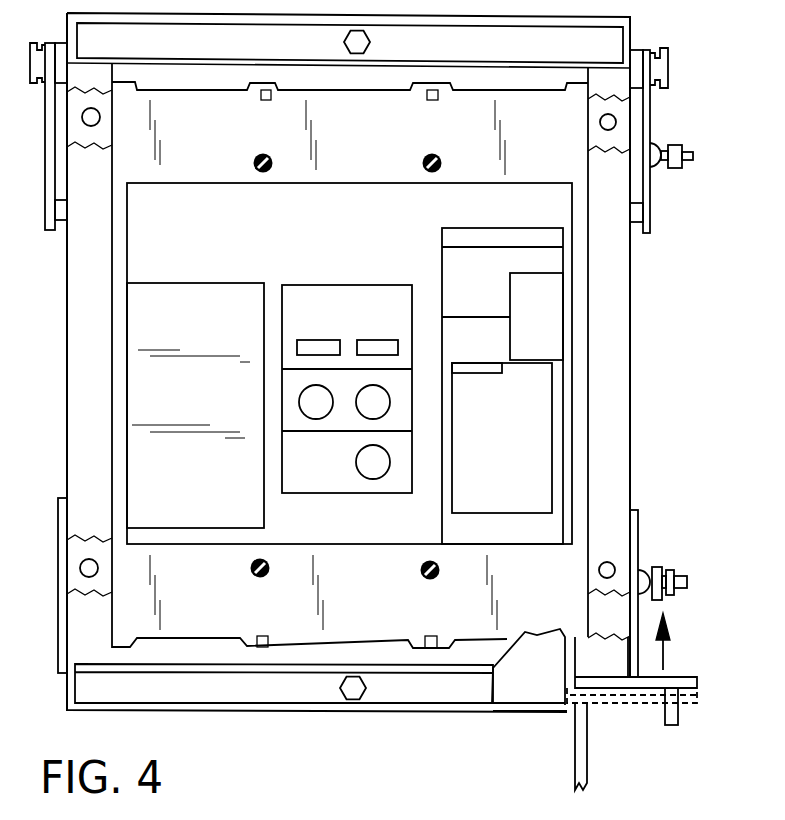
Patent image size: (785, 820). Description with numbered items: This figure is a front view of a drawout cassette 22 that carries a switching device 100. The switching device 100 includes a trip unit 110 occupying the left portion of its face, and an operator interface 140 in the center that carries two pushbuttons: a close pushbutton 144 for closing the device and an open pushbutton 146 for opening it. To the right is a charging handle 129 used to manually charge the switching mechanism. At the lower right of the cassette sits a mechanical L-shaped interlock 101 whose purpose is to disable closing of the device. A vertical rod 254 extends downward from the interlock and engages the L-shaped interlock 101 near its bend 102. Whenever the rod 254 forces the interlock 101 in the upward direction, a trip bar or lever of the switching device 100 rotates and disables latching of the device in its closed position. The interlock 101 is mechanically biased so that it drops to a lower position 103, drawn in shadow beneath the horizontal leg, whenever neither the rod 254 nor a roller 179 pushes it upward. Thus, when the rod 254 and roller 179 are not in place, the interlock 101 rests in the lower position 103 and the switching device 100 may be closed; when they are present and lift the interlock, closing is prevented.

The drawout cassette 22 is at (316, 764).
The switching device 100 is at (192, 623).
The L-shaped interlock 101 is at (683, 672).
The bend 102 is at (566, 689).
The lower position 103 is at (698, 693).
The trip unit 110 is at (215, 508).
The charging handle 129 is at (553, 324).
The operator interface 140 is at (333, 476).
The close pushbutton 144 is at (383, 402).
The open pushbutton 146 is at (375, 473).
The roller 179 is at (672, 726).
The vertical rod 254 is at (588, 737).